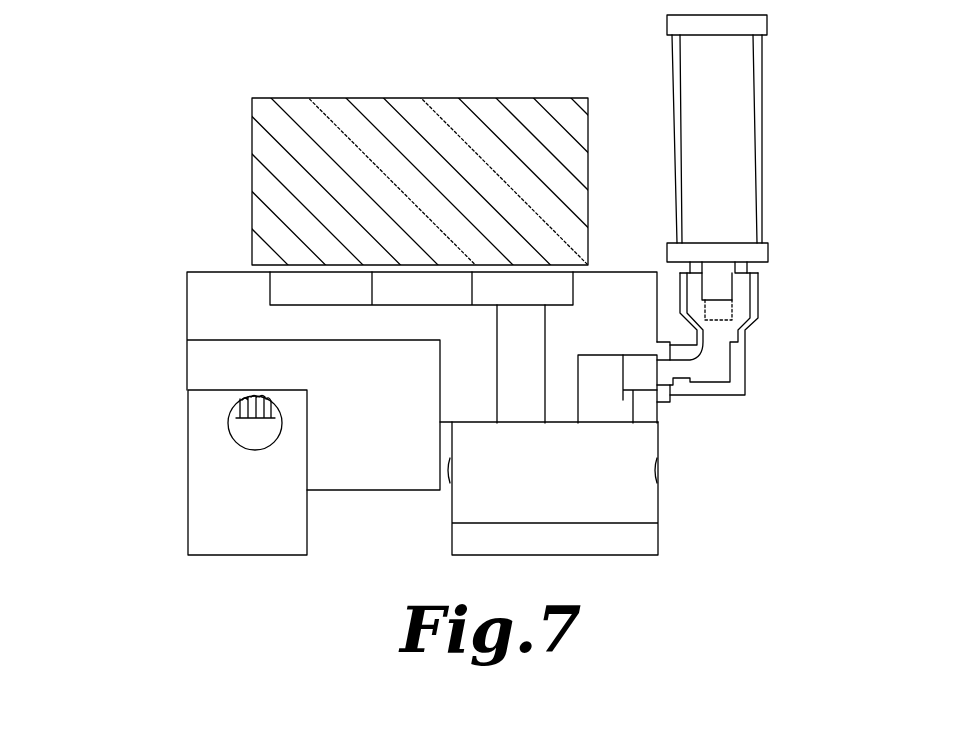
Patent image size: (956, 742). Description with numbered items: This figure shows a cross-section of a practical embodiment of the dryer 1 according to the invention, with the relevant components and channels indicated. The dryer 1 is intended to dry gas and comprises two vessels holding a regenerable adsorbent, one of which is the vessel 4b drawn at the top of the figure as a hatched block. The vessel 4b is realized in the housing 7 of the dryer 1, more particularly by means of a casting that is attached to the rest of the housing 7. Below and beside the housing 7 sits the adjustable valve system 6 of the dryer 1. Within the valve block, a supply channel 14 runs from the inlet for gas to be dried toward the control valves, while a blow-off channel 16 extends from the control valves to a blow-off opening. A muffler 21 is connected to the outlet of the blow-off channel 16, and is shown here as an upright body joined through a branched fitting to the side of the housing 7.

The dryer 1 is at (190, 107).
The vessel 4b is at (310, 127).
The housing 7 is at (217, 312).
The adjustable valve system 6 is at (185, 573).
The supply channel 14 is at (518, 355).
The blow-off channel 16 is at (641, 381).
The muffler 21 is at (752, 160).